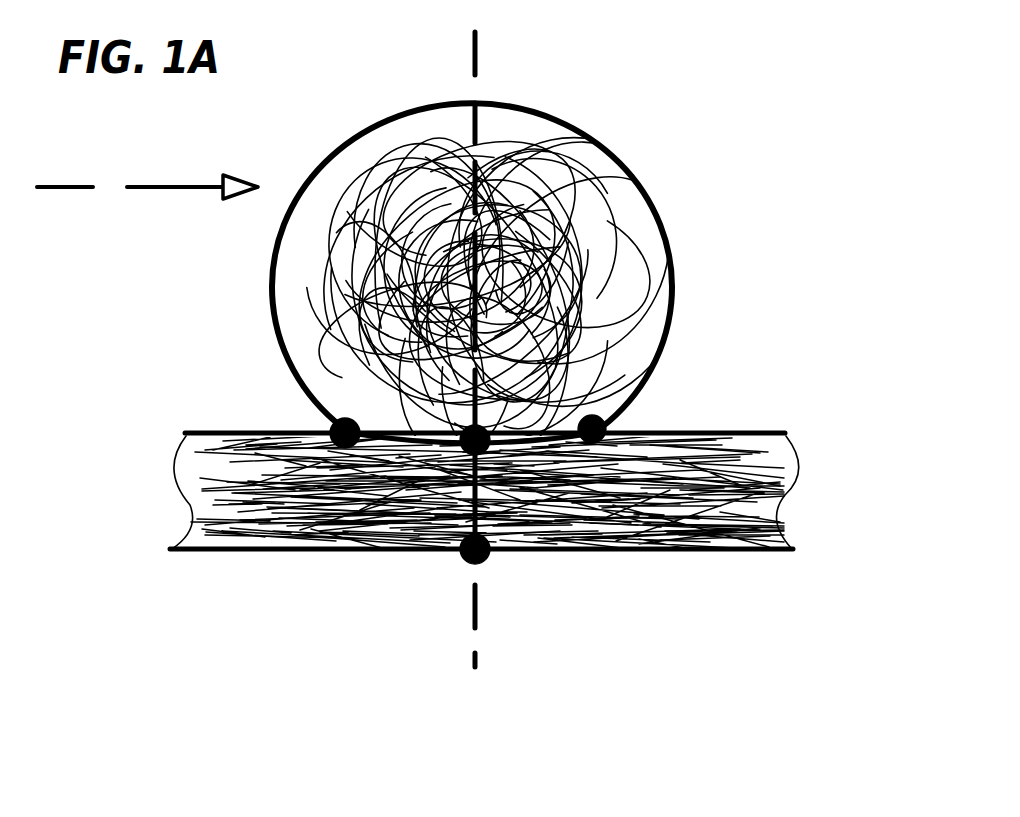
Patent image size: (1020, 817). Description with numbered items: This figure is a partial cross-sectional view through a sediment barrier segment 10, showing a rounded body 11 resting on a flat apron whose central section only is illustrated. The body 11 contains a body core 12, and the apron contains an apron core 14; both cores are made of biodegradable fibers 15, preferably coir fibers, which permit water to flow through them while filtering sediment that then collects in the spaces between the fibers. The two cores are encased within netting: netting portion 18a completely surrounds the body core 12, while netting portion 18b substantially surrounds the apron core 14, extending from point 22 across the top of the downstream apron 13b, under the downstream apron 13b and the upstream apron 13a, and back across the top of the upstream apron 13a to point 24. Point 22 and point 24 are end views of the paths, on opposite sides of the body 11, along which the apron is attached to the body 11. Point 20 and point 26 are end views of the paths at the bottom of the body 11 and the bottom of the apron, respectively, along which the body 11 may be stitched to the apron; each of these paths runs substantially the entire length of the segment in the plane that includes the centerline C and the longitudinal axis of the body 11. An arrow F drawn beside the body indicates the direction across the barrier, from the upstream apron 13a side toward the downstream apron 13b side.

The fibrous structure assembly 10 is at (699, 206).
The body 11 is at (512, 91).
The body core 12 is at (378, 208).
The upstream apron 13a is at (249, 574).
The downstream apron 13b is at (724, 413).
The apron core 14 is at (755, 528).
The biodegradable fibers 15 is at (205, 490).
The netting portion 18a is at (560, 122).
The netting portion 18b is at (756, 432).
The point 20 is at (500, 442).
The point 22 is at (607, 425).
The point 24 is at (333, 428).
The point 26 is at (477, 562).
The centerline C is at (470, 62).
The force direction F is at (147, 187).